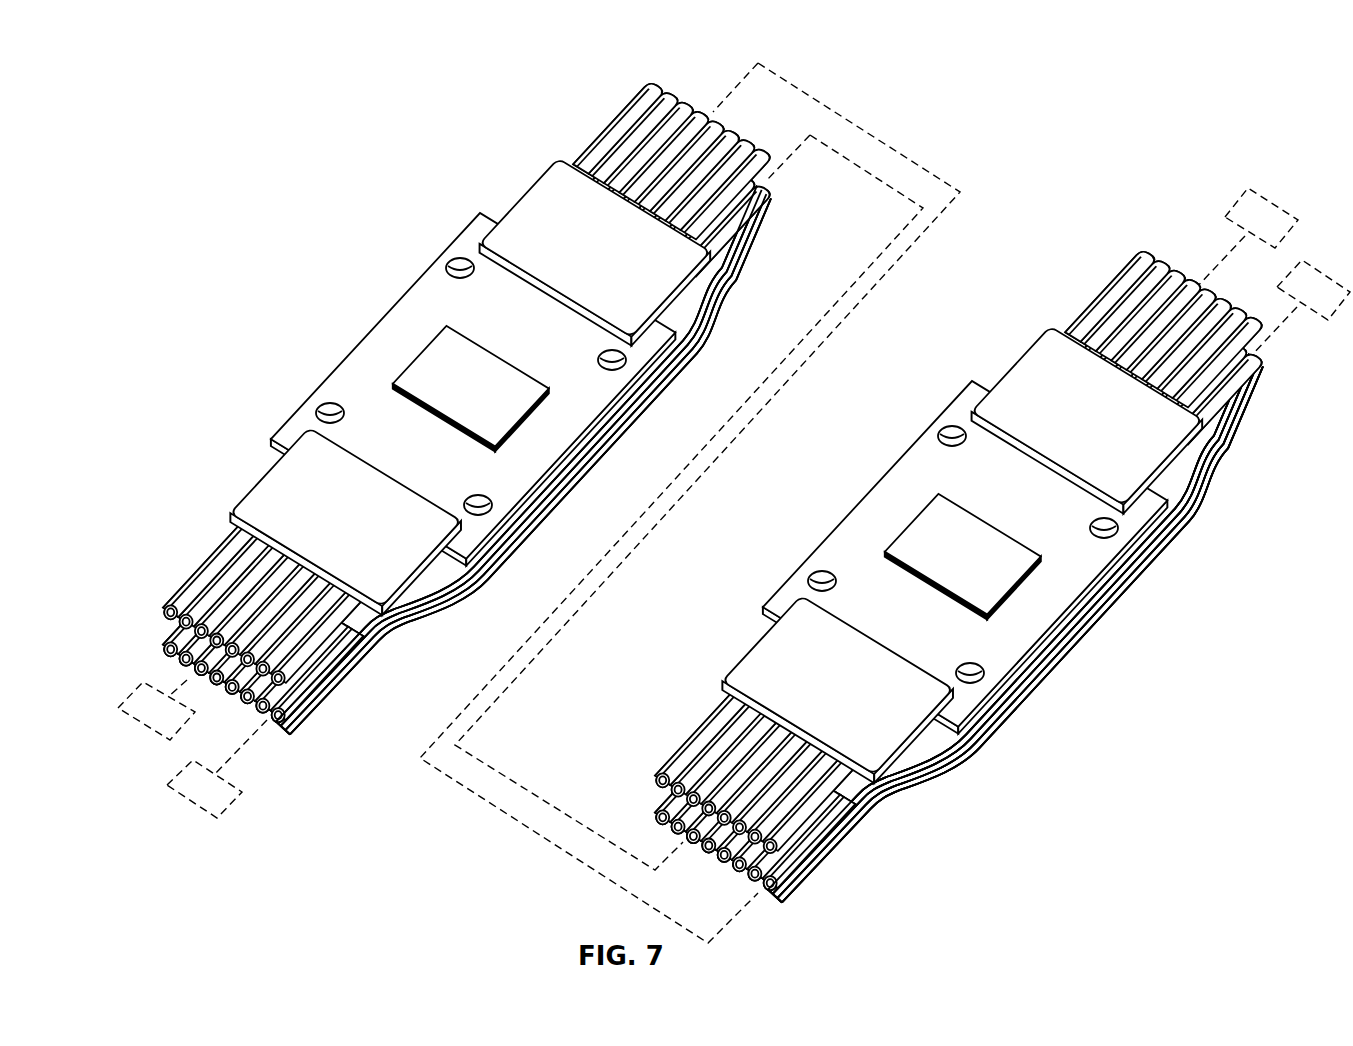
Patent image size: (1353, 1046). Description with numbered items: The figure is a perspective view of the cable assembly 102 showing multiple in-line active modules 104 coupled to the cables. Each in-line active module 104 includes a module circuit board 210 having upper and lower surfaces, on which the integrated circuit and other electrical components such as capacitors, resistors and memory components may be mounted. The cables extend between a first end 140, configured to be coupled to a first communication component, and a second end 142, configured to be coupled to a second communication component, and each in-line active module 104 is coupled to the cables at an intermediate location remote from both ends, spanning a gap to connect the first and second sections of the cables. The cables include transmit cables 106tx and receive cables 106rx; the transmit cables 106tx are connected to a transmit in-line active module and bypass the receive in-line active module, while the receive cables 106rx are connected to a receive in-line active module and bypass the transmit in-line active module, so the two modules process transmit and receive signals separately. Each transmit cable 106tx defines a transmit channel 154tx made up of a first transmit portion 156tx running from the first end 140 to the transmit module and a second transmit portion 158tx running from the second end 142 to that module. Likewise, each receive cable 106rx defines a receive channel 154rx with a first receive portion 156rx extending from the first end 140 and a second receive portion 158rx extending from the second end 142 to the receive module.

The cable assembly 102 is at (500, 163).
The in-line active module 104 is at (348, 295).
The transmit cables 106tx is at (652, 90).
The receive cables 106rx is at (727, 231).
The first end 140 is at (165, 681).
The second end 142 is at (1238, 232).
The transmit channel 154tx is at (206, 574).
The receive channel 154rx is at (696, 744).
The first transmit portion 156tx is at (224, 546).
The first receive portion 156rx is at (340, 678).
The second transmit portion 158tx is at (613, 110).
The second receive portion 158rx is at (727, 257).
The module circuit board 210 is at (553, 436).